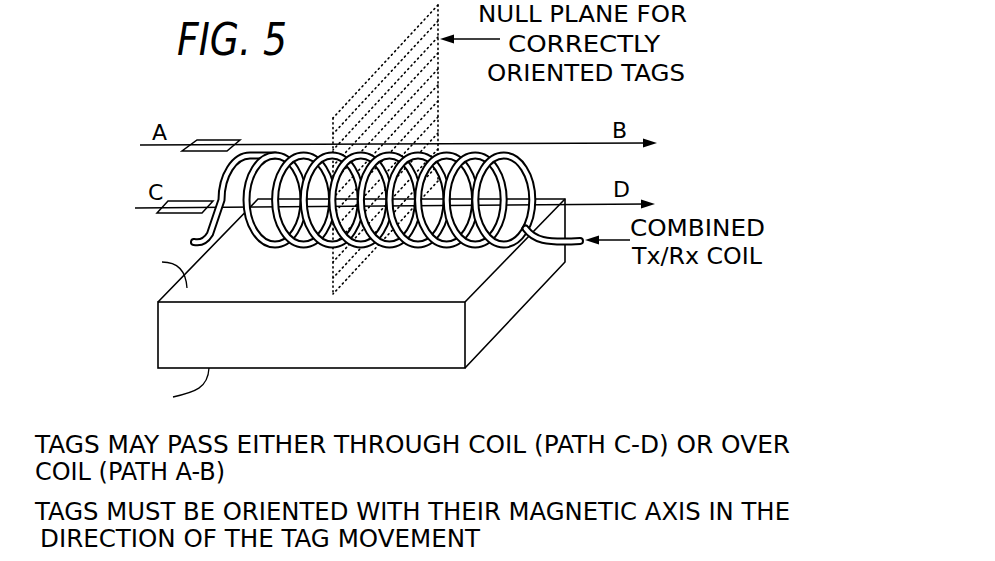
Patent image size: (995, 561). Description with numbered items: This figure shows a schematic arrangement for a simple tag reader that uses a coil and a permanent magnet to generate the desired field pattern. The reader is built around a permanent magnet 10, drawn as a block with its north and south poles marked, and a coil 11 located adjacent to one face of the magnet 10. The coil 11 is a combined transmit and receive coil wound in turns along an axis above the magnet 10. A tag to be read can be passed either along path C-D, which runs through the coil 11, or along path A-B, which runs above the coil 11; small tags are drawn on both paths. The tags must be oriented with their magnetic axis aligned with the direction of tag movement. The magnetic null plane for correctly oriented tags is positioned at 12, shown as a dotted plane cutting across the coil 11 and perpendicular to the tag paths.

The permanent magnet 10 is at (483, 333).
The coil 11 is at (251, 156).
The magnetic null plane 12 is at (387, 64).